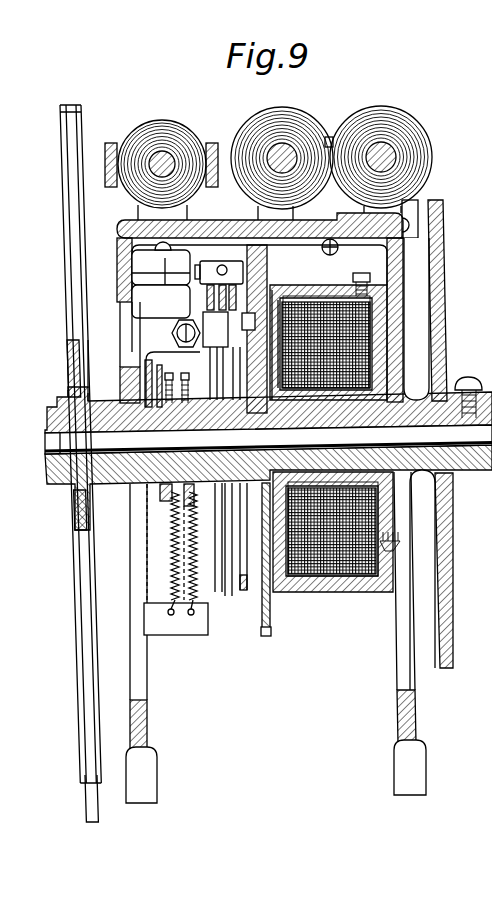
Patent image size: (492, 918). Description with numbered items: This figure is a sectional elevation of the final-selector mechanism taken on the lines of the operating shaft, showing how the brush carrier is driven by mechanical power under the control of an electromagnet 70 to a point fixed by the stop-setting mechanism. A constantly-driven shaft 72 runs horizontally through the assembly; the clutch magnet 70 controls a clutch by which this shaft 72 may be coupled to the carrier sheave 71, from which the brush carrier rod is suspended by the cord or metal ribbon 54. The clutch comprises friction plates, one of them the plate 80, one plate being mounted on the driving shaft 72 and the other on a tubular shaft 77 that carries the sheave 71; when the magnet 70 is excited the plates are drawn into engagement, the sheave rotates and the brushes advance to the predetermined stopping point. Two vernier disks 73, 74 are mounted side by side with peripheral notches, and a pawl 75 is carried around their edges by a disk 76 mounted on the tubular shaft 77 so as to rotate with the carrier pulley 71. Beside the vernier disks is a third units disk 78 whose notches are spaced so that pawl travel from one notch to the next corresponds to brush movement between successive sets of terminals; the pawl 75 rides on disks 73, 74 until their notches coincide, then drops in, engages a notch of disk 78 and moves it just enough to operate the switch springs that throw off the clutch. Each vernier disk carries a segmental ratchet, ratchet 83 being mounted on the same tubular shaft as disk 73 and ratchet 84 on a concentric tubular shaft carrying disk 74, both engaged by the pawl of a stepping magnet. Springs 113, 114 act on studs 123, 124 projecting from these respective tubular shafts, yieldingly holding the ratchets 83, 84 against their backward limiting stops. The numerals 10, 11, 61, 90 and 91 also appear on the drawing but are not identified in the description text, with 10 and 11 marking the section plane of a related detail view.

The direction arrow 10 is at (165, 446).
The direction arrow 11 is at (191, 449).
The cord or metal ribbon 54 is at (85, 803).
The spool flange 61 is at (270, 290).
The electromagnet (clutch magnet) 70 is at (327, 305).
The carrier sheave 71 is at (66, 150).
The driving shaft 72 is at (268, 439).
The vernier disk 73 is at (216, 293).
The vernier disk 74 is at (222, 302).
The pawl 75 is at (235, 261).
The disk 76 is at (262, 250).
The tubular shaft 77 is at (108, 406).
The units disk (stop-wheel) 78 is at (244, 596).
The friction plate 80 is at (283, 300).
The segmental ratchet 83 is at (158, 357).
The segmental ratchet 84 is at (167, 372).
The pulley 90 is at (160, 120).
The pulleys 91 is at (360, 116).
The spring 113 is at (176, 543).
The spring 114 is at (172, 517).
The stud 123 is at (136, 362).
The stud 124 is at (134, 350).